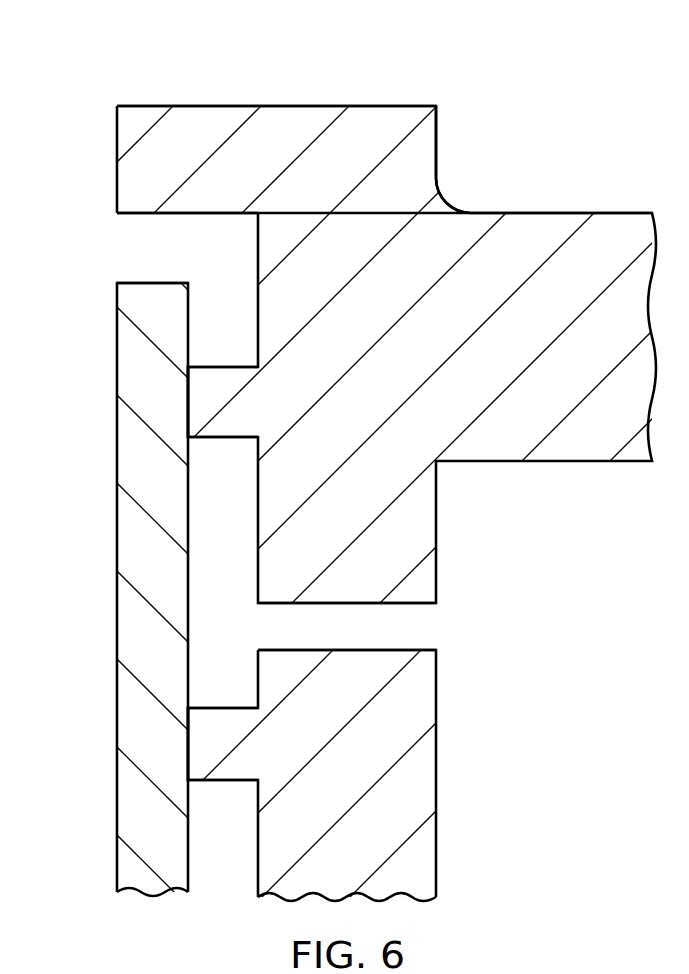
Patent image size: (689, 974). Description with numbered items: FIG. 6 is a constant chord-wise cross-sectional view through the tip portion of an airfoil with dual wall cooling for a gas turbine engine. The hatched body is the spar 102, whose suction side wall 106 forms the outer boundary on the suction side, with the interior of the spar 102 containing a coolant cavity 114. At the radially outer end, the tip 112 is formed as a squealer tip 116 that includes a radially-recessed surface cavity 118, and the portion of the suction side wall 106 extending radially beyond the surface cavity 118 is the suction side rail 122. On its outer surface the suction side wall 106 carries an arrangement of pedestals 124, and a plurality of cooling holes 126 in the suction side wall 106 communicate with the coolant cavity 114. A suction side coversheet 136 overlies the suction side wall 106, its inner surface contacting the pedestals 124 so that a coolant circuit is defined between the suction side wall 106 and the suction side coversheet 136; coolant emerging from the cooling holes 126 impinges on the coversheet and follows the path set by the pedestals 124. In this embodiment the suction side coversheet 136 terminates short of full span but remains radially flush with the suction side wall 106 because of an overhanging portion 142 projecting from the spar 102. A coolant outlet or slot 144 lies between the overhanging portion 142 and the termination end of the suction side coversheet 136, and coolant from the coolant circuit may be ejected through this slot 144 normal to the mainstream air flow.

The spar 102 is at (572, 489).
The suction side wall 106 is at (428, 778).
The tip 112 is at (344, 317).
The coolant cavity 114 is at (572, 706).
The squealer tip 116 is at (546, 98).
The surface cavity 118 is at (536, 213).
The suction side rail 122 is at (300, 106).
The pedestals 124 is at (215, 367).
The cooling holes 126 is at (428, 627).
The suction side coversheet 136 is at (125, 540).
The overhanging portion 142 is at (117, 185).
The coolant outlet or slot 144 is at (128, 250).